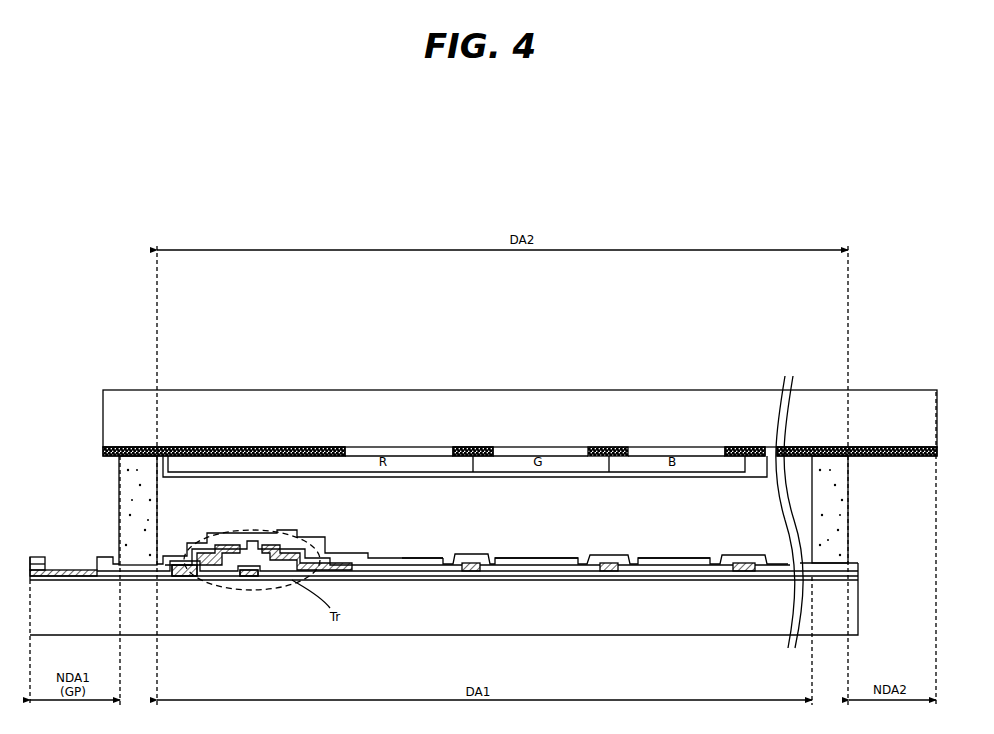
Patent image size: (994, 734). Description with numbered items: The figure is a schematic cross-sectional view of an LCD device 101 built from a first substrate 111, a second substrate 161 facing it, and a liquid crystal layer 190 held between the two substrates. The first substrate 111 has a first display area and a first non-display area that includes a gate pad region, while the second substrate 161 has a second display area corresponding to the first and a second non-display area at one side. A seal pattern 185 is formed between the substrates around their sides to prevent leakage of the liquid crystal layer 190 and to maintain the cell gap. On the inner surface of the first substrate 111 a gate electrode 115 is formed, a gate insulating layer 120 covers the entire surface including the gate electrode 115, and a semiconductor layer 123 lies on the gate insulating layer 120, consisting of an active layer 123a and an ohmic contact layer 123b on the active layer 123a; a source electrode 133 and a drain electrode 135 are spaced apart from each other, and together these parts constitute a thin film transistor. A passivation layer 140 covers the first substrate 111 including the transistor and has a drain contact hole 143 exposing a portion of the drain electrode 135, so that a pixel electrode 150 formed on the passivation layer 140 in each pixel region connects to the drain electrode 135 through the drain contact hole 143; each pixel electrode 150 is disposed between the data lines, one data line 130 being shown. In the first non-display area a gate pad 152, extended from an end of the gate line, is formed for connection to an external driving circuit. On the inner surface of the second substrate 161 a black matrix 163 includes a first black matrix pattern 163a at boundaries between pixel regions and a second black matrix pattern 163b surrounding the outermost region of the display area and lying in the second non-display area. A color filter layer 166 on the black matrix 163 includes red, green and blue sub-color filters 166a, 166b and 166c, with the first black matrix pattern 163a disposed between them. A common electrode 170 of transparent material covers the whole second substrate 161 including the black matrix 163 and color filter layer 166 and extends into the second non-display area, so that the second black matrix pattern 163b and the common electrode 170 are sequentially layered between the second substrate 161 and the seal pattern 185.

The LCD device 101 is at (736, 324).
The first substrate 111 is at (444, 596).
The gate electrode 115 is at (257, 581).
The gate insulating layer 120 is at (399, 572).
The semiconductor layer 123 is at (268, 676).
The active layer 123a is at (203, 578).
The ohmic contact layer 123b is at (230, 578).
The data line 130 is at (487, 563).
The source electrode 133 is at (229, 547).
The drain electrode 135 is at (275, 547).
The passivation layer 140 is at (402, 562).
The drain contact hole 143 is at (334, 542).
The pixel electrode 150 is at (450, 562).
The gate pad 152 is at (58, 567).
The second substrate 161 is at (520, 418).
The black matrix 163 is at (410, 347).
The first black matrix pattern 163a is at (455, 450).
The second black matrix pattern 163b is at (317, 447).
The color filter layer 166 is at (623, 345).
The red sub-color filter 166a is at (465, 455).
The green sub-color filter 166b is at (558, 452).
The blue sub-color filter 166c is at (660, 452).
The common electrode 170 is at (697, 470).
The seal pattern 185 is at (128, 482).
The liquid crystal layer 190 is at (170, 517).